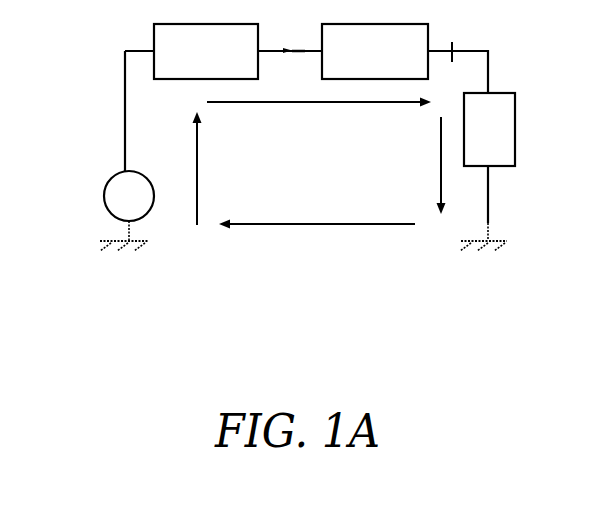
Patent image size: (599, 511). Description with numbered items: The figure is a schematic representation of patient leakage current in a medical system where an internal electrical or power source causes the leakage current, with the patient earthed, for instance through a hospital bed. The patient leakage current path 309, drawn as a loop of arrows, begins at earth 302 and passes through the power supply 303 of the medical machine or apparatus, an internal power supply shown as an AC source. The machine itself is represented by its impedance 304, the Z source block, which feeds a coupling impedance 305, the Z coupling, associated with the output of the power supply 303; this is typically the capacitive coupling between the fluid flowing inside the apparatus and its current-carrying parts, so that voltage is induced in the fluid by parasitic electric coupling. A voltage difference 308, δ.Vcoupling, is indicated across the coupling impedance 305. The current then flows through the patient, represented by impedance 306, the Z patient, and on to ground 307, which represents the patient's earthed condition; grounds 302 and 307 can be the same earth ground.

The earth 302 is at (124, 258).
The power supply 303 is at (106, 196).
The impedance 304 is at (206, 51).
The coupling impedance 305 is at (375, 51).
The impedance 306 is at (489, 129).
The ground 307 is at (483, 259).
The voltage difference 308 is at (450, 43).
The patient leakage current path 309 is at (319, 156).